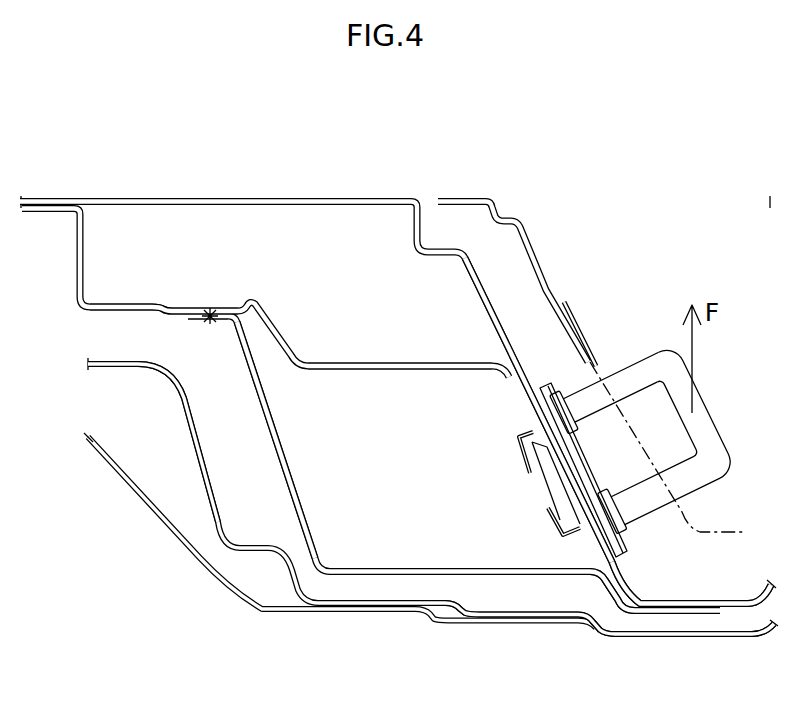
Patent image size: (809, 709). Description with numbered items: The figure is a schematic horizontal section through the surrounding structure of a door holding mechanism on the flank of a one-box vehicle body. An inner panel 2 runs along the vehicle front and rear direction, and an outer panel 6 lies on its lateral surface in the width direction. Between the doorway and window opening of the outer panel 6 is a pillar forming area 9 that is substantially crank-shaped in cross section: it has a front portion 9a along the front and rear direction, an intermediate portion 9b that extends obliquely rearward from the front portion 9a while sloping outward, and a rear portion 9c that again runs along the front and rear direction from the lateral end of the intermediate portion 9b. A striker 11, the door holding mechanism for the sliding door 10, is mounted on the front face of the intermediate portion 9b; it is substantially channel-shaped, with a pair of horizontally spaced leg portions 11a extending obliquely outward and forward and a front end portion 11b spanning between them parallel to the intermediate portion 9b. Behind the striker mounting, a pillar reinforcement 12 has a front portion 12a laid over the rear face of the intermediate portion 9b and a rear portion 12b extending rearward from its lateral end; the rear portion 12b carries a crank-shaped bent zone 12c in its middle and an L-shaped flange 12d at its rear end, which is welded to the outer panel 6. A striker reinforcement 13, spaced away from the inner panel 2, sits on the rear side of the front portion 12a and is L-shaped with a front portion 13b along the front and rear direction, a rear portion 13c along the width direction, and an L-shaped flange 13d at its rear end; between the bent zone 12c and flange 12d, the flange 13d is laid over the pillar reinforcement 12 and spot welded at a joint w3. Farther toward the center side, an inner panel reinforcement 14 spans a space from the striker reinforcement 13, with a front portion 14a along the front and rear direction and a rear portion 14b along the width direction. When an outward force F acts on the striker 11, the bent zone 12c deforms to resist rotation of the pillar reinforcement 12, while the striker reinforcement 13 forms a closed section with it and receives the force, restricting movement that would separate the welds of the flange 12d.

The inner panel 2 is at (183, 607).
The outer panel 6 is at (159, 176).
The pillar forming area 9 is at (398, 362).
The front portion 9a is at (705, 600).
The intermediate portion 9b is at (494, 308).
The rear portion 9c is at (300, 198).
The sliding door 10 is at (702, 185).
The striker 11 is at (674, 415).
The leg portions 11a is at (636, 439).
The front end portion 11b is at (638, 364).
The pillar reinforcement 12 is at (324, 383).
The front portion 12a is at (524, 418).
The rear portion 12b is at (402, 373).
The bent zone 12c is at (277, 331).
The flange 12d is at (45, 212).
The striker reinforcement 13 is at (380, 463).
The front portion 13b is at (503, 570).
The rear portion 13c is at (281, 451).
The flange 13d is at (205, 318).
The inner panel reinforcement 14 is at (428, 516).
The front portion 14a is at (508, 604).
The rear portion 14b is at (197, 432).
The joint w3 is at (210, 310).